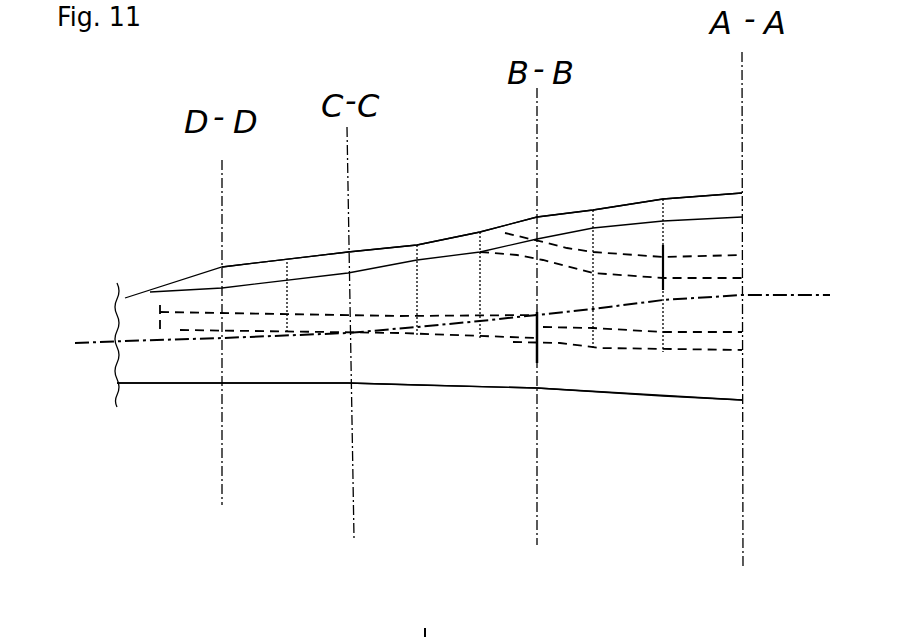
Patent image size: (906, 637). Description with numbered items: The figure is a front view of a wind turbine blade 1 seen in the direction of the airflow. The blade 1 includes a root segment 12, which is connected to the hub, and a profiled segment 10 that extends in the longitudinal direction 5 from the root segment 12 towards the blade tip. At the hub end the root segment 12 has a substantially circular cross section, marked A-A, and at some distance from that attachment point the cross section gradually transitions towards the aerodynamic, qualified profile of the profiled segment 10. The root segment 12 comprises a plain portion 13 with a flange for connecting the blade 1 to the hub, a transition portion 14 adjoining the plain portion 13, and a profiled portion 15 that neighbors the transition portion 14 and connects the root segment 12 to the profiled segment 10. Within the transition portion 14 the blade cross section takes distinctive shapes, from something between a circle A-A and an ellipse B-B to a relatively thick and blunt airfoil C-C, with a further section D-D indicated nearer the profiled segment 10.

The blade 1 is at (612, 541).
The longitudinal direction 5 is at (73, 343).
The profiled segment 10 is at (158, 378).
The profiled portion 15 is at (285, 363).
The transition portion 14 is at (442, 345).
The plain portion 13 is at (639, 337).
The root segment 12 is at (424, 528).